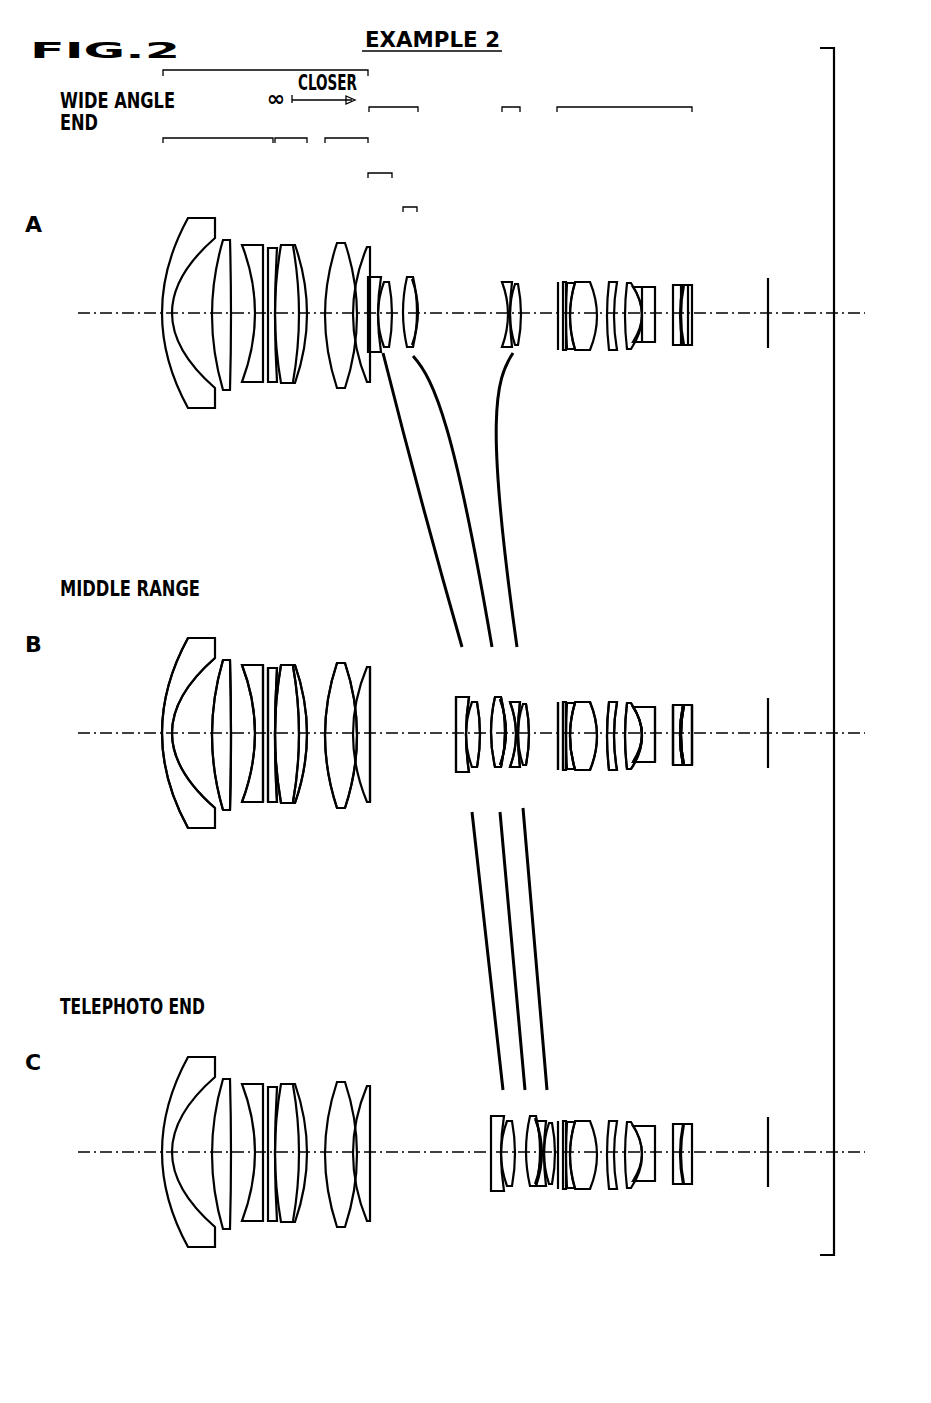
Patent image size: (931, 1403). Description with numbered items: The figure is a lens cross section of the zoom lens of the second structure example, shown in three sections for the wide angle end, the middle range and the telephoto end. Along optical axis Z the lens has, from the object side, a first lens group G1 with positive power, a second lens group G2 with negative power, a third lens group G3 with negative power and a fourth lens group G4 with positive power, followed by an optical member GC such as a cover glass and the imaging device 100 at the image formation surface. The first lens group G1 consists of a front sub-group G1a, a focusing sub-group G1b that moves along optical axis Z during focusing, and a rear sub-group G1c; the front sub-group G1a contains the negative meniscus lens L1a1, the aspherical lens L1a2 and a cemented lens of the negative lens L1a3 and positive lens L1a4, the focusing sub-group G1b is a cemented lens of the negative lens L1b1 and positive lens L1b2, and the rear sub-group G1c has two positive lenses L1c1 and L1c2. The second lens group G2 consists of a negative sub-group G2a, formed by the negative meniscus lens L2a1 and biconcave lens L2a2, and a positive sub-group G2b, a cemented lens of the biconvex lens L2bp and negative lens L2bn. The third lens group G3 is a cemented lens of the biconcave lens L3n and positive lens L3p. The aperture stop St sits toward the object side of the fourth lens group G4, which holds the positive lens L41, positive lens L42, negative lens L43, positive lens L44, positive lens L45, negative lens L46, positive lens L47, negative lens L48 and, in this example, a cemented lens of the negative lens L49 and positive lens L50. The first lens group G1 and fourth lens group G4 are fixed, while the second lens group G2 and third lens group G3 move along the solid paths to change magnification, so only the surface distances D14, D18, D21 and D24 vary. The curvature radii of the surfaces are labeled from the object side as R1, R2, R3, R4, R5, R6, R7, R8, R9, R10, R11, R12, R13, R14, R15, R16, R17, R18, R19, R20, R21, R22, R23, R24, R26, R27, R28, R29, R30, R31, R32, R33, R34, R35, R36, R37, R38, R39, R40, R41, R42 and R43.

The first lens group G1 is at (265, 62).
The 1a-th lens group G1a is at (218, 129).
The 1b-th lens group G1b is at (290, 129).
The 1c-th lens group G1c is at (346, 129).
The second lens group G2 is at (393, 98).
The 2a-th lens group G2a is at (380, 164).
The 2b-th lens group G2b is at (411, 199).
The third lens group G3 is at (510, 98).
The fourth lens group G4 is at (624, 98).
The 1a1-st lens L1a1 is at (200, 228).
The 1a2-nd lens L1a2 is at (226, 242).
The 1a3-rd lens L1a3 is at (252, 245).
The 1a4-th lens L1a4 is at (271, 248).
The 1b1-st lens L1b1 is at (279, 383).
The 1b2-nd lens L1b2 is at (296, 383).
The 1c1-st lens L1c1 is at (339, 388).
The 1c2-nd lens L1c2 is at (366, 382).
The 2a1-st lens L2a1 is at (372, 353).
The 2a2-nd lens L2a2 is at (387, 349).
The 2bp-th lens L2bp is at (412, 277).
The 2bn-th lens L2bn is at (418, 279).
The 3n-th lens L3n is at (506, 282).
The 3p-th lens L3p is at (517, 283).
The 4-1st lens L41 is at (563, 352).
The 4-2nd lens L42 is at (569, 352).
The 4-3rd lens L43 is at (585, 352).
The 4-4th lens L44 is at (608, 280).
The 4-5th lens L45 is at (628, 282).
The 4-6th lens L46 is at (637, 283).
The 4-7th lens L47 is at (646, 283).
The 4-8th lens L48 is at (682, 284).
The 4-9th lens L49 is at (686, 285).
The 4-10th lens L50 is at (691, 285).
The optical member GC is at (697, 288).
The aperture stop St is at (557, 330).
The imaging device 100 is at (768, 280).
The optical axis Z is at (120, 312).
The surface distance D14 is at (368, 276).
The surface distance D18 is at (398, 290).
The surface distance D21 is at (532, 1214).
The surface distance D24 is at (536, 312).
The curvature radius of first surface R1 is at (169, 785).
The curvature radius of second surface R2 is at (197, 790).
The curvature radius of third surface R3 is at (220, 800).
The curvature radius of fourth surface R4 is at (230, 805).
The curvature radius of fifth surface R5 is at (243, 800).
The curvature radius of sixth surface R6 is at (262, 802).
The curvature radius of seventh surface R7 is at (268, 802).
The curvature radius of eighth surface R8 is at (277, 802).
The curvature radius of ninth surface R9 is at (282, 803).
The curvature radius of tenth surface R10 is at (294, 802).
The curvature radius of eleventh surface R11 is at (338, 806).
The curvature radius of twelfth surface R12 is at (346, 808).
The curvature radius of thirteenth surface R13 is at (369, 802).
The curvature radius of fourteenth surface R14 is at (371, 790).
The curvature radius of fifteenth surface R15 is at (457, 770).
The curvature radius of sixteenth surface R16 is at (468, 772).
The curvature radius of seventeenth surface R17 is at (477, 768).
The curvature radius of eighteenth surface R18 is at (494, 768).
The curvature radius of nineteenth surface R19 is at (500, 766).
The curvature radius of twentieth surface R20 is at (503, 768).
The curvature radius of twenty-first surface R21 is at (511, 768).
The curvature radius of twenty-second surface R22 is at (519, 768).
The curvature radius of twenty-third surface R23 is at (527, 766).
The curvature radius of twenty-fourth surface R24 is at (560, 770).
The curvature radius of twenty-sixth surface R26 is at (572, 702).
The curvature radius of twenty-seventh surface R27 is at (584, 702).
The curvature radius of twenty-eighth surface R28 is at (598, 702).
The curvature radius of twenty-ninth surface R29 is at (609, 702).
The curvature radius of thirtieth surface R30 is at (622, 703).
The curvature radius of thirty-first surface R31 is at (590, 770).
The curvature radius of thirty-second surface R32 is at (612, 770).
The curvature radius of thirty-third surface R33 is at (618, 770).
The curvature radius of thirty-fourth surface R34 is at (628, 770).
The curvature radius of thirty-fifth surface R35 is at (650, 768).
The curvature radius of thirty-sixth surface R36 is at (655, 765).
The curvature radius of thirty-seventh surface R37 is at (675, 765).
The curvature radius of thirty-eighth surface R38 is at (684, 765).
The curvature radius of thirty-ninth surface R39 is at (668, 705).
The curvature radius of fortieth surface R40 is at (690, 705).
The curvature radius of forty-first surface R41 is at (693, 708).
The curvature radius of forty-second surface R42 is at (695, 710).
The curvature radius of forty-third surface R43 is at (697, 714).